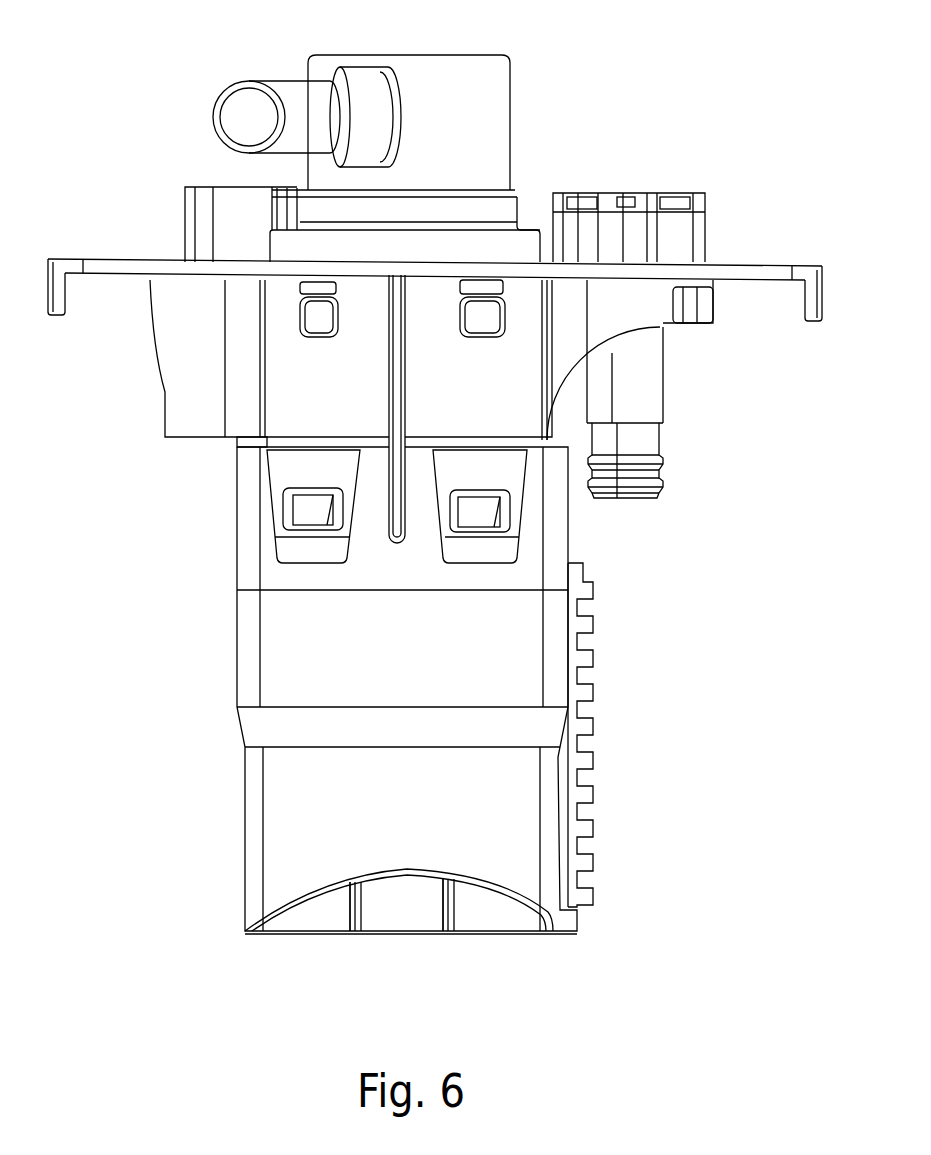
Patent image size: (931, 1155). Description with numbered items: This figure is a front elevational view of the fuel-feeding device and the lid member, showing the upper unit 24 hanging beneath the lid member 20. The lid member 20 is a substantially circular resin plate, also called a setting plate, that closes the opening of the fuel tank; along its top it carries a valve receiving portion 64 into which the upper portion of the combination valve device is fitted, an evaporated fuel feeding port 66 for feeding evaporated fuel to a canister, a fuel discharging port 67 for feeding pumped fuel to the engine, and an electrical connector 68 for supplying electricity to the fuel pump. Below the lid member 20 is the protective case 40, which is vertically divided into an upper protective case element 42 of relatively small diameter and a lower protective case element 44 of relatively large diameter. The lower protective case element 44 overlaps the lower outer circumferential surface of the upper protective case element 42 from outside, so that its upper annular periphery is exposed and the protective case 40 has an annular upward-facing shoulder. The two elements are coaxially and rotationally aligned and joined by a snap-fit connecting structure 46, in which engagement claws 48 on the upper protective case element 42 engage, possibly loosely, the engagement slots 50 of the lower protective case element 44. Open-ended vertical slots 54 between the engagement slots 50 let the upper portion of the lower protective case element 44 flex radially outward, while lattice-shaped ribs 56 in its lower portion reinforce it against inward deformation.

The lid member 20 is at (752, 270).
The upper unit 24 is at (678, 687).
The protective case 40 is at (380, 607).
The upper protective case element 42 is at (290, 387).
The lower protective case element 44 is at (313, 647).
The snap-fit connecting structure 46 is at (397, 509).
The engagement claws 48 is at (313, 508).
The engagement slots 50 is at (275, 523).
The vertical slots 54 is at (406, 438).
The ribs 56 is at (358, 902).
The valve receiving portion 64 is at (523, 242).
The evaporated fuel feeding port 66 is at (292, 92).
The fuel discharging port 67 is at (636, 374).
The electrical connector 68 is at (237, 198).